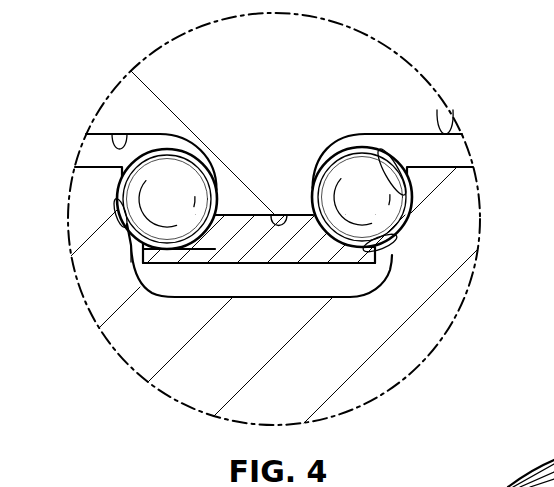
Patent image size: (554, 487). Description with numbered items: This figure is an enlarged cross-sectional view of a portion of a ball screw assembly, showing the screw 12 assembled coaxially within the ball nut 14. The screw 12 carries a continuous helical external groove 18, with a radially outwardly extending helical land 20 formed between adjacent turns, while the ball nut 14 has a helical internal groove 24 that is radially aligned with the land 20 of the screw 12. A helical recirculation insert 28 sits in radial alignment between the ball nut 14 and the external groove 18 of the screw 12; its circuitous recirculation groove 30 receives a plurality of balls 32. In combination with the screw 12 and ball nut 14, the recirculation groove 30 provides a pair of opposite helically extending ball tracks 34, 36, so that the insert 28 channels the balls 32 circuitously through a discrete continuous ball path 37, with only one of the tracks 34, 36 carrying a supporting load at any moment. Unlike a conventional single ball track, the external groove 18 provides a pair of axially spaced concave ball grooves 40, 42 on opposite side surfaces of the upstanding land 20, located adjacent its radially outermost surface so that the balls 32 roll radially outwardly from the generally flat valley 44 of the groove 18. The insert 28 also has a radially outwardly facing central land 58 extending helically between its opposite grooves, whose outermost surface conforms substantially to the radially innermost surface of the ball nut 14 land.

The screw 12 is at (465, 216).
The ball nut 14 is at (127, 100).
The helical external groove 18 is at (332, 302).
The helical land 20 is at (90, 166).
The helical internal groove 24 is at (118, 142).
The helical recirculation insert 28 is at (257, 258).
The recirculation groove 30 is at (384, 242).
The balls 32 is at (130, 220).
The ball track 34 is at (119, 289).
The ball track 36 is at (271, 212).
The ball path 37 is at (254, 136).
The ball groove 40 is at (392, 175).
The ball groove 42 is at (140, 223).
The flat valley 44 is at (204, 297).
The central land 58 is at (311, 259).